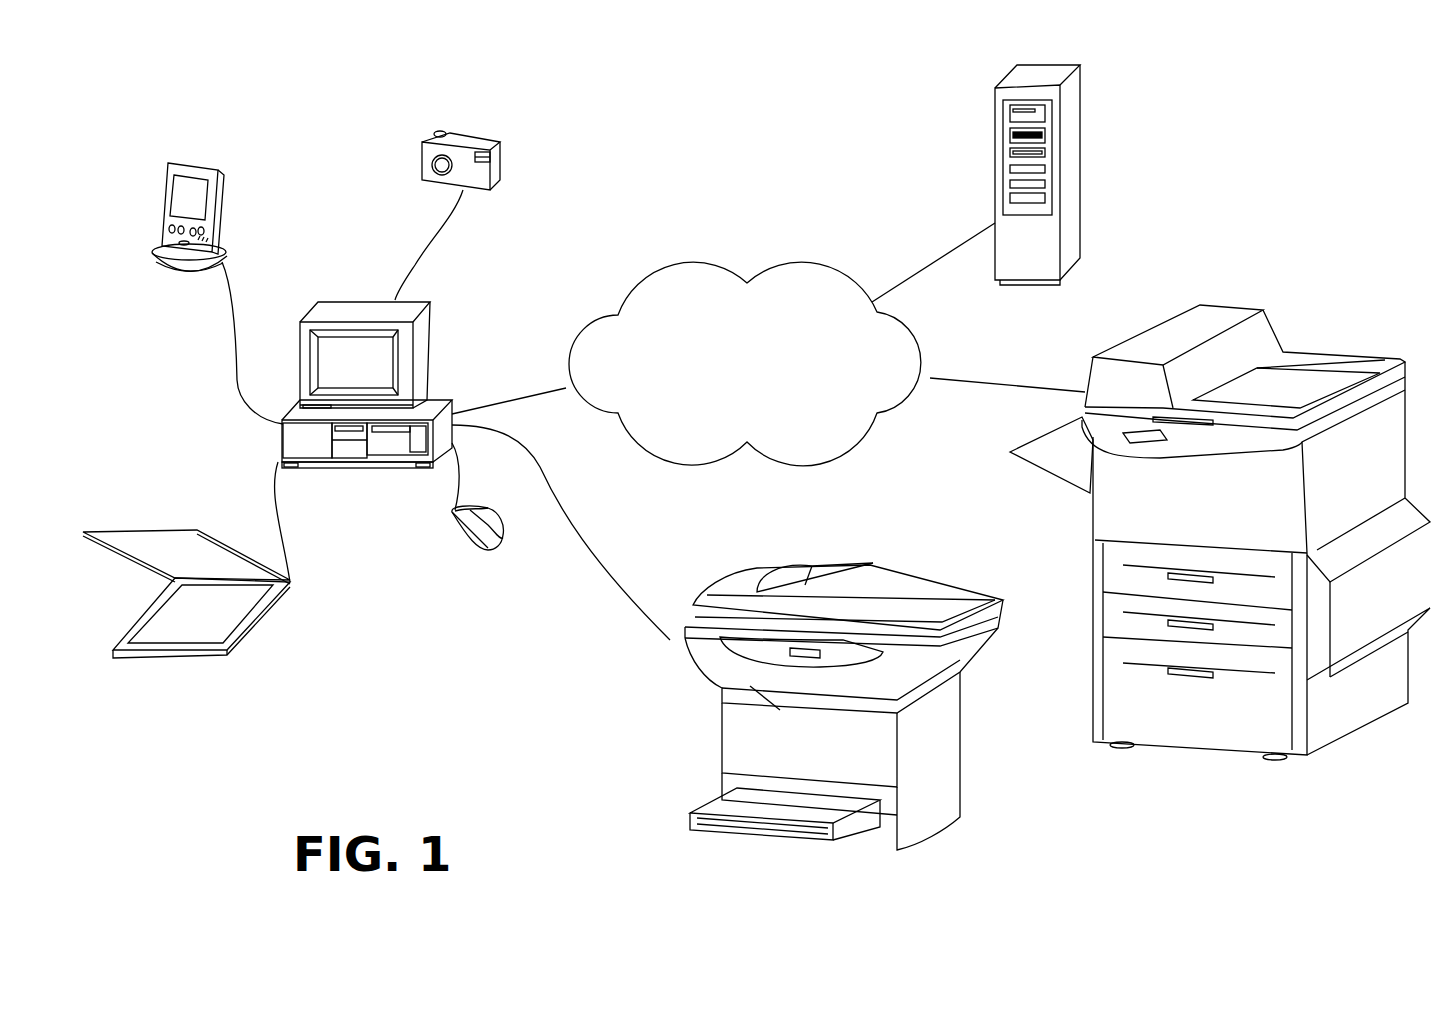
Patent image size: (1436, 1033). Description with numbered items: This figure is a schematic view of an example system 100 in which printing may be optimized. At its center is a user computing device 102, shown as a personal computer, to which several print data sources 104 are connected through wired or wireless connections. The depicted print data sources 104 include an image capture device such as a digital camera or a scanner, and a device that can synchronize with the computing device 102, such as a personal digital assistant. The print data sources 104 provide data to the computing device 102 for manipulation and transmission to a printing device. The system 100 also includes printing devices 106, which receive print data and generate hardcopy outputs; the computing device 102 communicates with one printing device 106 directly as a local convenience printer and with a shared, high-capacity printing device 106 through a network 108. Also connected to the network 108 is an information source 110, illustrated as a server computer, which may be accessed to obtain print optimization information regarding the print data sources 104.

The system 100 is at (1353, 123).
The user computing device 102 is at (425, 346).
The print data sources 104 is at (163, 207).
The printing devices 106 is at (948, 788).
The network 108 is at (767, 387).
The information source 110 is at (1073, 140).